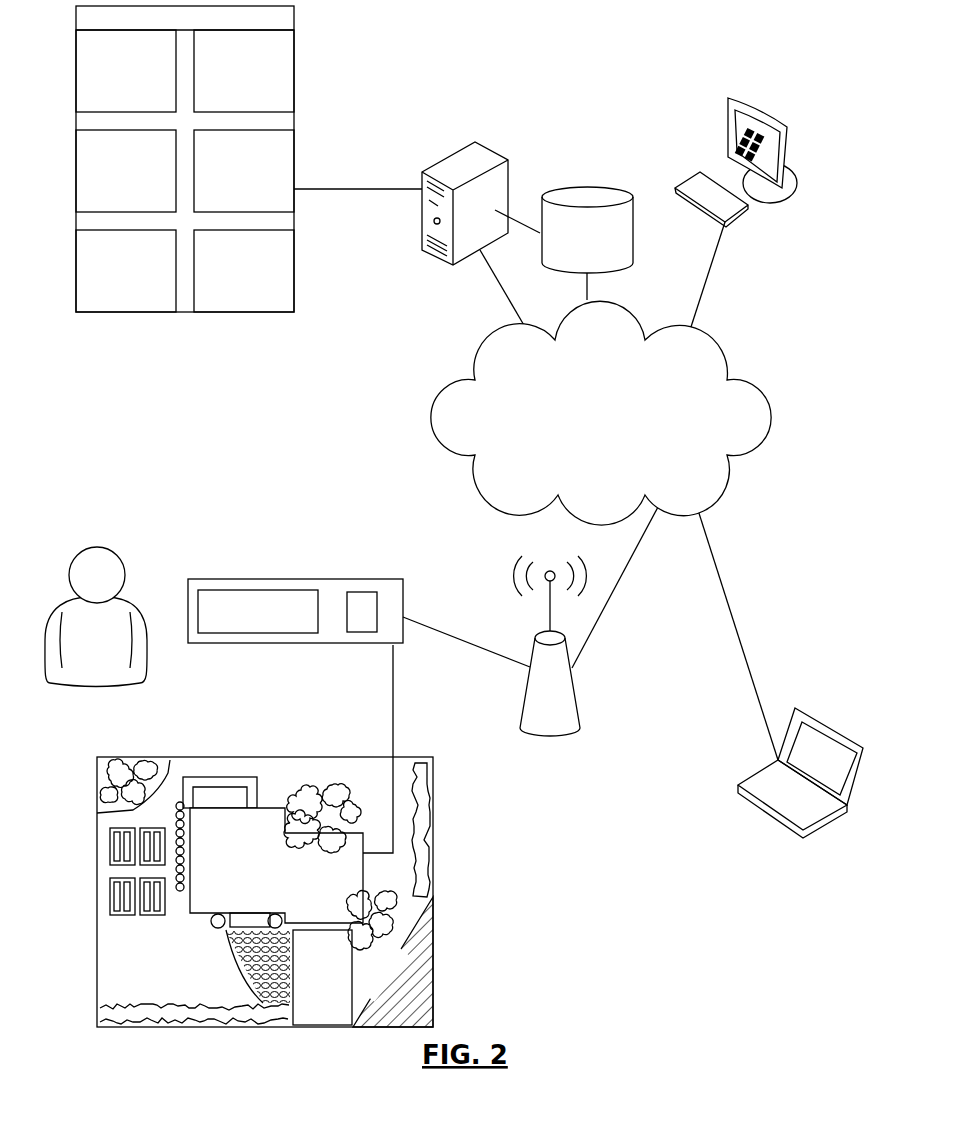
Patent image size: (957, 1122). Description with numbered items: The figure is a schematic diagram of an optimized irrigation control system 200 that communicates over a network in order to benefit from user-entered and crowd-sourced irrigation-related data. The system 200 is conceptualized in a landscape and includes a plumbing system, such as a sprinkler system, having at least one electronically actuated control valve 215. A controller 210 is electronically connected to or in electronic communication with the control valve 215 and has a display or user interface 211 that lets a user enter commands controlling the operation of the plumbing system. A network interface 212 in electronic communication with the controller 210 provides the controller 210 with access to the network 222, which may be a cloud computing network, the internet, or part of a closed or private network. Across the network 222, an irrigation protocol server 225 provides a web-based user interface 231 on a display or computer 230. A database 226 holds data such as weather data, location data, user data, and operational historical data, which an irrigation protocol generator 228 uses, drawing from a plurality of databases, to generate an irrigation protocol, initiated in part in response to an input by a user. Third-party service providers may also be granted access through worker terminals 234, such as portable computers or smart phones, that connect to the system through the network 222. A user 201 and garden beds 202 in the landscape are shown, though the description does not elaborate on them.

The optimized irrigation control system 200 is at (458, 544).
The user 201 is at (108, 543).
The garden beds / irrigation zone 202 is at (113, 870).
The controller 210 is at (376, 727).
The user interface 211 is at (258, 612).
The network interface 212 is at (573, 722).
The electronically actuated control valve 215 is at (365, 860).
The network 222 is at (433, 437).
The irrigation protocol server 225 is at (465, 172).
The database 226 is at (587, 223).
The irrigation protocol generator 228 is at (295, 52).
The display or computer 230 is at (769, 150).
The web based user interface 231 is at (767, 152).
The worker terminals 234 is at (770, 820).